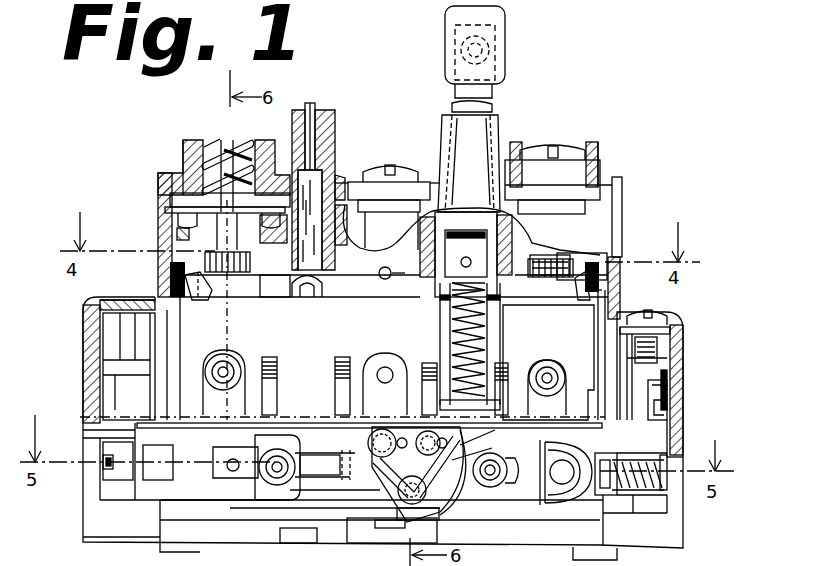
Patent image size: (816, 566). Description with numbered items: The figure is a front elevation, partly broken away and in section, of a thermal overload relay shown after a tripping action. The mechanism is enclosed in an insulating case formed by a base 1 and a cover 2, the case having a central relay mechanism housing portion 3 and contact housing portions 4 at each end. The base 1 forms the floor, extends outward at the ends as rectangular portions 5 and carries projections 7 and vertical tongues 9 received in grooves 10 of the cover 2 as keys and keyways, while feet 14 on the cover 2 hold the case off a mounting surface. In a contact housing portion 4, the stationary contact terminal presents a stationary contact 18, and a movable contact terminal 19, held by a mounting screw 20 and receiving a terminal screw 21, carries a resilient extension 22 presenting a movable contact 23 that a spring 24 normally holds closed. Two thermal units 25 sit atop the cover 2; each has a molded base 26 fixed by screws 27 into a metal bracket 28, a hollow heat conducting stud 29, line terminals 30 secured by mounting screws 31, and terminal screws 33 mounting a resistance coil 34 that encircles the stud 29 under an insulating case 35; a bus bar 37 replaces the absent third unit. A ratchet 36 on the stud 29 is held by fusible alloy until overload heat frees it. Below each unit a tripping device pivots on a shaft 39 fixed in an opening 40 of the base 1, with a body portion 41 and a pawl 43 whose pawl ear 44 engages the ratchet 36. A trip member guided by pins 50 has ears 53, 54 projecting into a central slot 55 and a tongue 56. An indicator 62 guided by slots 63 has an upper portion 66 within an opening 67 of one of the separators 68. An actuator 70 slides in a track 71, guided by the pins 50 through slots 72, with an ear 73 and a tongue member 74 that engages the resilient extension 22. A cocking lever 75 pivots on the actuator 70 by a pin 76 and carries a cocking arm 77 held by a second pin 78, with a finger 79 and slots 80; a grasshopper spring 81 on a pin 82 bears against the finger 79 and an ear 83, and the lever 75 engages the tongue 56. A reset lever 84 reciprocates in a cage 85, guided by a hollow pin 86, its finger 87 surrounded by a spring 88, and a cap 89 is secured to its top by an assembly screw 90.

The base 1 is at (92, 524).
The cover 2 is at (622, 195).
The central relay mechanism housing portion 3 is at (440, 180).
The contact housing portions 4 is at (95, 302).
The generally rectangular portions 5 is at (85, 487).
The projections 7 is at (350, 545).
The vertical tongues 9 is at (170, 280).
The slots or grooves 10 is at (165, 270).
The feet 14 is at (165, 550).
The stationary contact 18 is at (602, 497).
The movable contact terminal 19 is at (670, 334).
The mounting screw 20 is at (667, 392).
The terminal screw 21 is at (655, 313).
The resilient extension 22 is at (662, 360).
The movable contact 23 is at (612, 495).
The spring 24 is at (668, 455).
The thermal units 25 is at (180, 153).
The molded base 26 is at (165, 210).
The screws 27 is at (170, 198).
The metal bracket 28 is at (177, 236).
The heat conducting stud 29 is at (240, 145).
The line terminals 30 is at (245, 290).
The mounting screws 31 is at (377, 310).
The terminal screws 33 is at (568, 150).
The resistance coil 34 is at (220, 138).
The insulating case 35 is at (190, 140).
The ratchet 36 is at (248, 243).
The bus bar 37 is at (385, 200).
The shaft 39 is at (238, 358).
The opening 40 is at (388, 368).
The body portion 41 is at (306, 386).
The pawl 43 is at (198, 300).
The pawl ear 44 is at (188, 262).
The pins 50 is at (283, 458).
The ear 53 is at (462, 487).
The ear 54 is at (320, 469).
The central slot 55 is at (318, 445).
The tongue 56 is at (385, 528).
The indicator 62 is at (298, 299).
The slots 63 is at (318, 299).
The upper portion 66 is at (316, 110).
The opening 67 is at (335, 115).
The separators 68 is at (500, 120).
The actuator 70 is at (222, 478).
The track 71 is at (196, 500).
The slots 72 is at (525, 440).
The ear 73 is at (335, 491).
The tongue member 74 is at (560, 498).
The cocking lever 75 is at (463, 483).
The pin 76 is at (382, 429).
The cocking arm 77 is at (428, 431).
The second pin 78 is at (438, 428).
The finger 79 is at (487, 432).
The slots 80 is at (402, 438).
The grasshopper spring 81 is at (482, 450).
The pin 82 is at (412, 484).
The ear 83 is at (406, 467).
The reset lever 84 is at (495, 108).
The cage 85 is at (500, 325).
The hollow pin 86 is at (477, 250).
The finger 87 is at (508, 370).
The spring 88 is at (450, 335).
The cap 89 is at (505, 68).
The assembly screw 90 is at (490, 47).